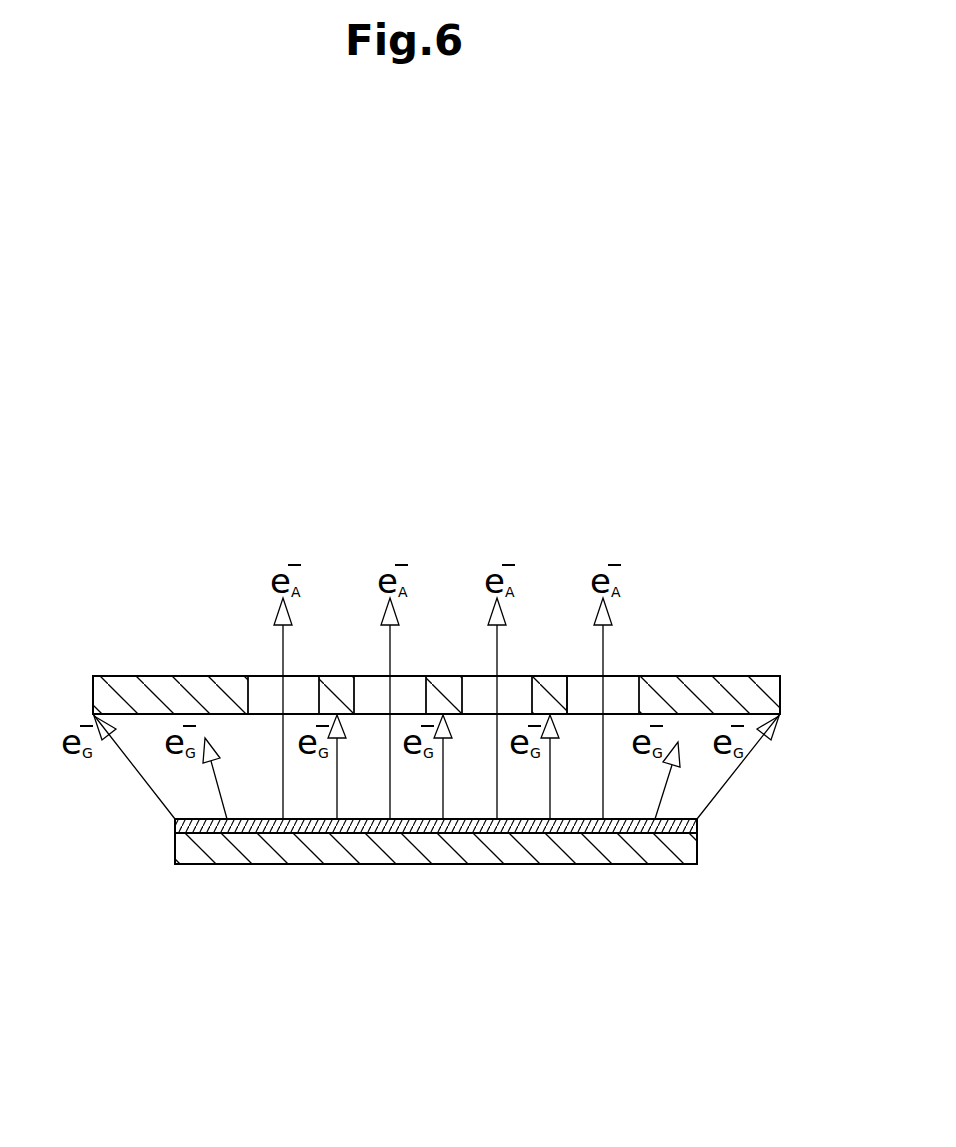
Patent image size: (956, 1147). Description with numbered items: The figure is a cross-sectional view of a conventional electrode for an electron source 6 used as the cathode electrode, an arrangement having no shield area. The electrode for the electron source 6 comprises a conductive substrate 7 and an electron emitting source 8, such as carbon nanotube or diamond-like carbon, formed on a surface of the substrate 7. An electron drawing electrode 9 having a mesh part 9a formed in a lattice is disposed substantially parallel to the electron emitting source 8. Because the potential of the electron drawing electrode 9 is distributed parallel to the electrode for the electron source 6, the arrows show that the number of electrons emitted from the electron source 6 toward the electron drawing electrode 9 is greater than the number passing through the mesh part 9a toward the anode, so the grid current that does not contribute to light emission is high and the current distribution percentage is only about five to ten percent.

The electron source 6 is at (723, 838).
The conductive substrate 7 is at (608, 857).
The electron emitting source 8 is at (347, 827).
The electron drawing electrode 9 is at (710, 678).
The mesh part 9a is at (612, 688).